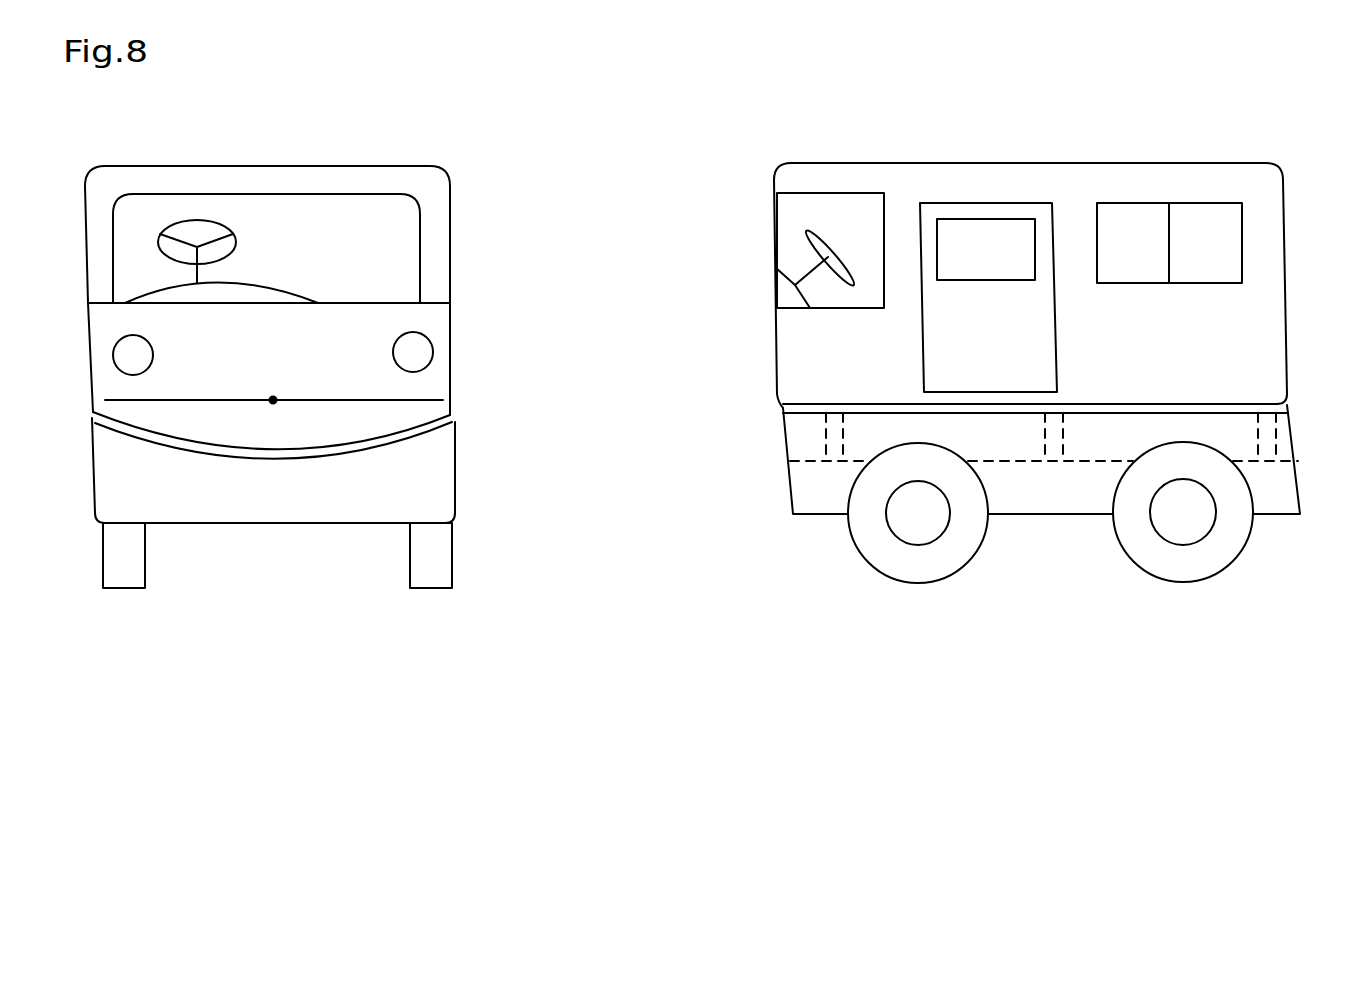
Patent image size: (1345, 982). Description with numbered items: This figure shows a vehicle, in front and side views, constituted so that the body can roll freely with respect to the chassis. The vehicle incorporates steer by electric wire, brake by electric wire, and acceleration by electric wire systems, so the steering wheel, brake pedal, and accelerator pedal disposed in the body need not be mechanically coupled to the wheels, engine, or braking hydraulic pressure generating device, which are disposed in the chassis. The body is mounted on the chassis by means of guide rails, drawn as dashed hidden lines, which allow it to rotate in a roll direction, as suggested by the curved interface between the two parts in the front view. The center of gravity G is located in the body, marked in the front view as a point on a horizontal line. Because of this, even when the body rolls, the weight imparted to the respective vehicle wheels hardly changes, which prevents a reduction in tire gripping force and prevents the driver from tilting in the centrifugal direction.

The center of gravity G is at (273, 400).